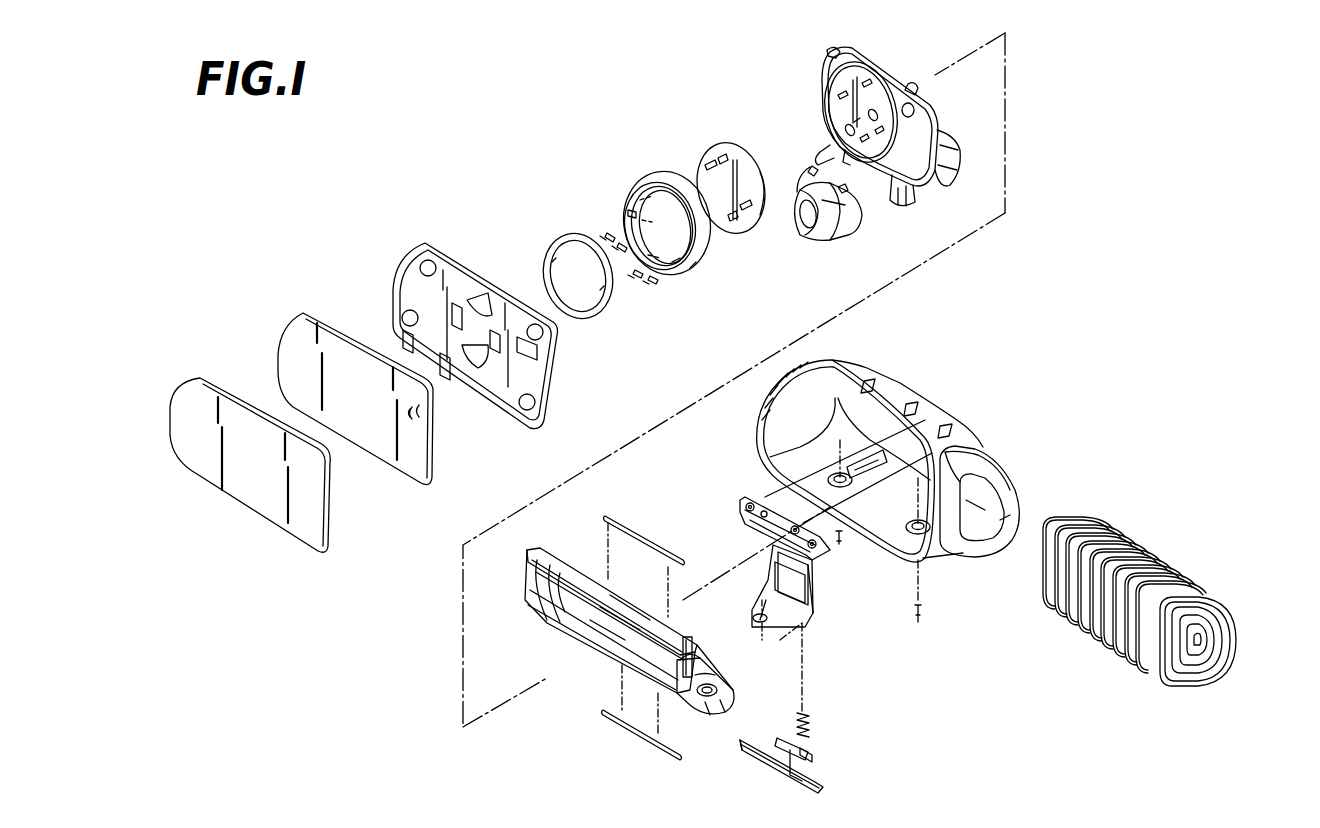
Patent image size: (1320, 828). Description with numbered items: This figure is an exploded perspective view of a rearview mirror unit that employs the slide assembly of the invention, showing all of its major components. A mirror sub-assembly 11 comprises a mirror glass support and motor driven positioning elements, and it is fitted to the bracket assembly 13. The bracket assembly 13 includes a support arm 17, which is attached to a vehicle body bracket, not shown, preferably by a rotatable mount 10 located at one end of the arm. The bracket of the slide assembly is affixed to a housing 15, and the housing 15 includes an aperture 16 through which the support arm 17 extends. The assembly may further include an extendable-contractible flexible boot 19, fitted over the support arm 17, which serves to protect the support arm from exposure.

The rotatable mount 10 is at (695, 710).
The mirror sub-assembly 11 is at (163, 387).
The bracket assembly 13 is at (858, 562).
The housing 15 is at (945, 402).
The aperture 16 is at (1020, 497).
The support arm 17 is at (573, 637).
The flexible boot 19 is at (1150, 557).